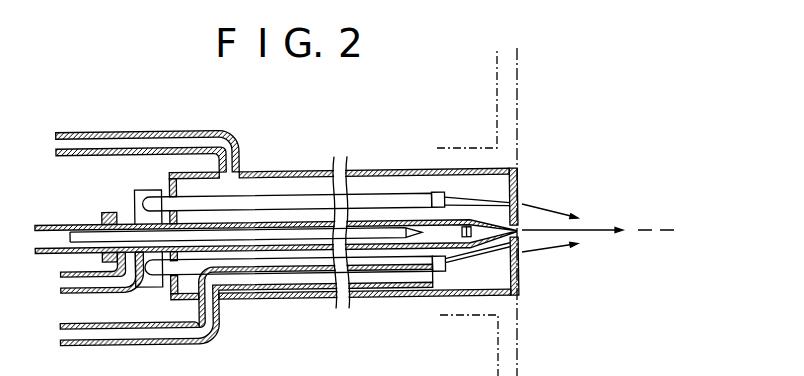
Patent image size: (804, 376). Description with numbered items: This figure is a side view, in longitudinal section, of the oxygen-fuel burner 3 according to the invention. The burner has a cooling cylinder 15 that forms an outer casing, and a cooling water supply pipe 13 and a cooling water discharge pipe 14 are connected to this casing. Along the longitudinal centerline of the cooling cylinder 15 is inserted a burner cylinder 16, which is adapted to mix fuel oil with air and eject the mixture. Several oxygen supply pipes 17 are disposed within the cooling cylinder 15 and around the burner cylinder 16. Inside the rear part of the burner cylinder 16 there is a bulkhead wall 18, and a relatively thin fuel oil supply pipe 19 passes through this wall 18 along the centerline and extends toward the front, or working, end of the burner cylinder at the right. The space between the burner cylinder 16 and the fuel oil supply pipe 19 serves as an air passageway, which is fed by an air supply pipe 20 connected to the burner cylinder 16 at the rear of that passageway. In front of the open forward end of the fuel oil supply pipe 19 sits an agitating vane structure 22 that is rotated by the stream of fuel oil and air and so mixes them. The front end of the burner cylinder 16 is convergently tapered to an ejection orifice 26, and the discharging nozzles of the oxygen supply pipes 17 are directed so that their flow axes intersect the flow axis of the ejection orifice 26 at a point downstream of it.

The oxygen-fuel burner 3 is at (334, 160).
The cooling water supply pipe 13 is at (123, 131).
The cooling water discharge pipe 14 is at (125, 344).
The cooling cylinder 15 is at (377, 172).
The burner cylinder 16 is at (303, 223).
The oxygen supply pipes 17 is at (413, 193).
The bulkhead wall 18 is at (125, 212).
The fuel oil supply pipe 19 is at (260, 211).
The air supply pipe 20 is at (73, 286).
The agitating vane structure 22 is at (469, 239).
The ejection orifice 26 is at (518, 233).